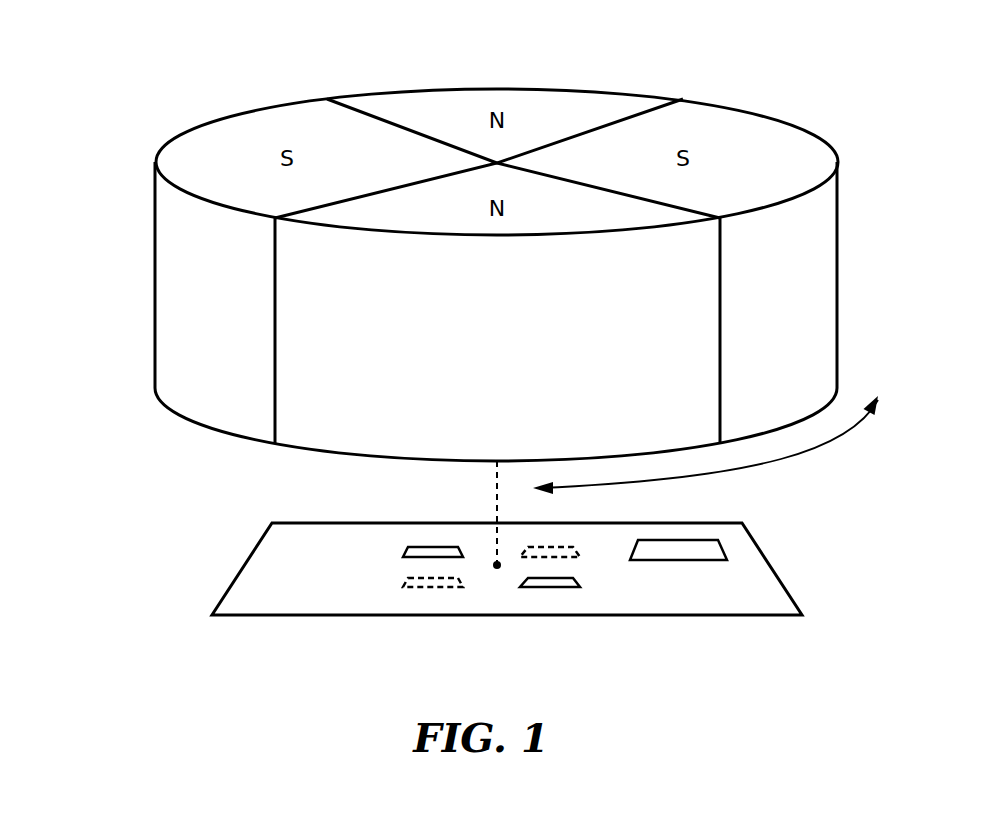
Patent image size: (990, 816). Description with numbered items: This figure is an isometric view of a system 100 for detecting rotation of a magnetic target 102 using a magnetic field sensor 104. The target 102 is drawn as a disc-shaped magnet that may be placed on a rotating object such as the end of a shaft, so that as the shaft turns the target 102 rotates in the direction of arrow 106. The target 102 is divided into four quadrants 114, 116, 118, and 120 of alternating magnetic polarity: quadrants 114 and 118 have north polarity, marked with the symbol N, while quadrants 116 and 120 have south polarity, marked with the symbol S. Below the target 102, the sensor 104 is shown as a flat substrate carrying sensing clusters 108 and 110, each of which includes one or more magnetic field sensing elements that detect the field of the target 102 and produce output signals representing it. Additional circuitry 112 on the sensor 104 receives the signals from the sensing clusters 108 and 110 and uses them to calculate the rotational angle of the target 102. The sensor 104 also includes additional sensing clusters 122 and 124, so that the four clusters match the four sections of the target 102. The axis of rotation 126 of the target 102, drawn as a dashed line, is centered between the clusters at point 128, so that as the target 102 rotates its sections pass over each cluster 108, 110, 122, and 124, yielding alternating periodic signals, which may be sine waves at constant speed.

The system 100 is at (135, 103).
The magnetic target 102 is at (837, 242).
The magnetic field sensor 104 is at (283, 569).
The arrow 106 is at (853, 447).
The sensing cluster 108 is at (548, 588).
The sensing cluster 110 is at (437, 546).
The additional circuitry 112 is at (677, 562).
The quadrant 114 is at (478, 322).
The quadrant 116 is at (768, 266).
The quadrant 118 is at (421, 125).
The quadrant 120 is at (193, 266).
The additional sensing cluster 122 is at (558, 546).
The additional sensing cluster 124 is at (445, 588).
The axis of rotation 126 is at (494, 488).
The point 128 is at (497, 565).